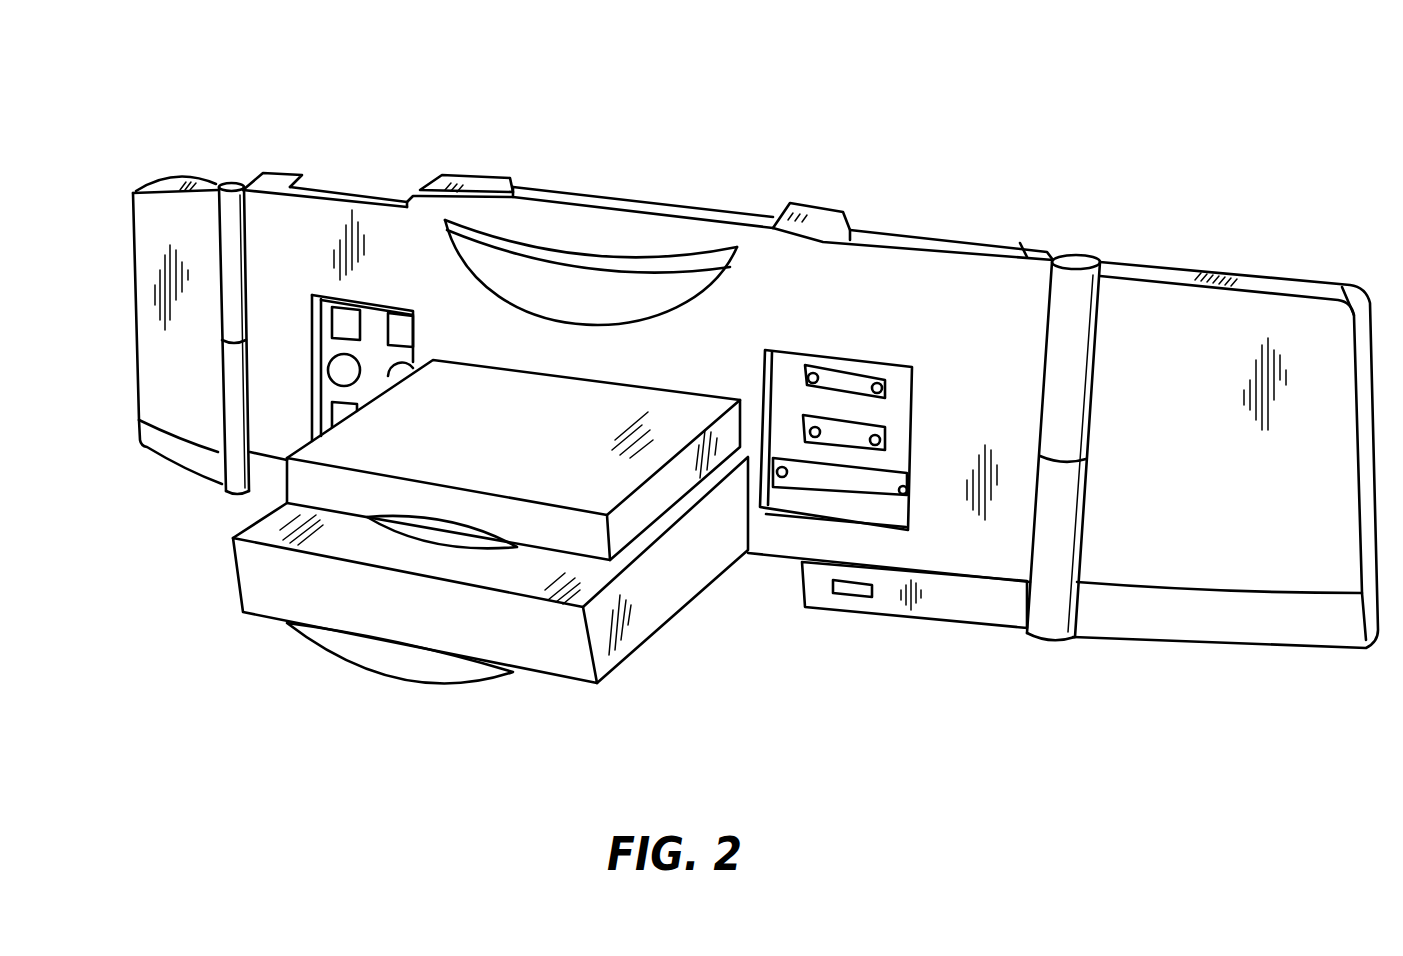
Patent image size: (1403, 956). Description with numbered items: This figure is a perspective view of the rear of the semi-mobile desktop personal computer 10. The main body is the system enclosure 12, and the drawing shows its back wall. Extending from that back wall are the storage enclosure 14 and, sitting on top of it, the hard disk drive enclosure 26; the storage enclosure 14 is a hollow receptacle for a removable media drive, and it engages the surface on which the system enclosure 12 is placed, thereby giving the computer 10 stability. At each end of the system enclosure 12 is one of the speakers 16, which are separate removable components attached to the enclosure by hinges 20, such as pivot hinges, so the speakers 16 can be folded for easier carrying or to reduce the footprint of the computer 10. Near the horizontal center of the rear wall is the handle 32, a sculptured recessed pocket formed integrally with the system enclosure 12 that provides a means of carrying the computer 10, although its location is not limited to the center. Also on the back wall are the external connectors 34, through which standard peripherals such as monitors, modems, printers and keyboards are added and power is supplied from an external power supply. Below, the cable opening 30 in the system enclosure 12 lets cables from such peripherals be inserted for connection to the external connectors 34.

The semi-mobile desktop personal computer 10 is at (1222, 121).
The system enclosure 12 is at (948, 228).
The storage enclosure 14 is at (653, 633).
The speakers 16 is at (140, 188).
The hinges 20 is at (233, 182).
The hard disk drive enclosure 26 is at (1303, 290).
The cable opening 30 is at (790, 595).
The handle 32 is at (597, 237).
The external connectors 34 is at (905, 418).